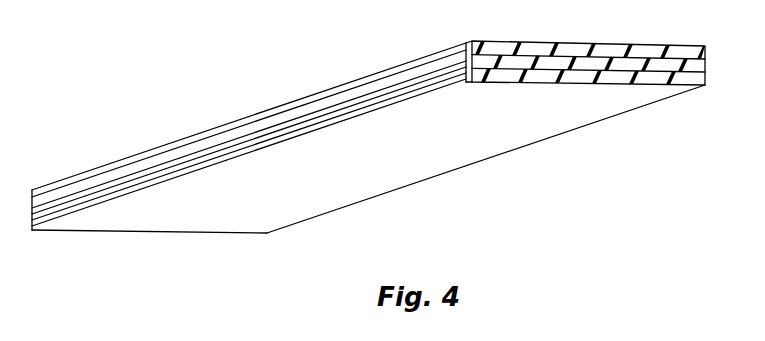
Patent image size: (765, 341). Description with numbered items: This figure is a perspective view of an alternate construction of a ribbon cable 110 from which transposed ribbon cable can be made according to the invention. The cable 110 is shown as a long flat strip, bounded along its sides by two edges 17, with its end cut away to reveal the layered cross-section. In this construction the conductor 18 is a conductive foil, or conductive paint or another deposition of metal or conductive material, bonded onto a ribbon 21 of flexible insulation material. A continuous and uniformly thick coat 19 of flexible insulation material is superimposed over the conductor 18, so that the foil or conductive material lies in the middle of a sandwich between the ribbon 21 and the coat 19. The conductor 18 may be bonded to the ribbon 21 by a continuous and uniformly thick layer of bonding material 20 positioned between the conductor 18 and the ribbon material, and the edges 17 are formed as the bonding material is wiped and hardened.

The cable 110 is at (354, 159).
The edges 17 is at (370, 93).
The conductor 18 is at (657, 46).
The coat of flexible insulation material 19 is at (513, 43).
The layer of bonding material 20 is at (588, 44).
The ribbon of flexible insulation material 21 is at (592, 80).